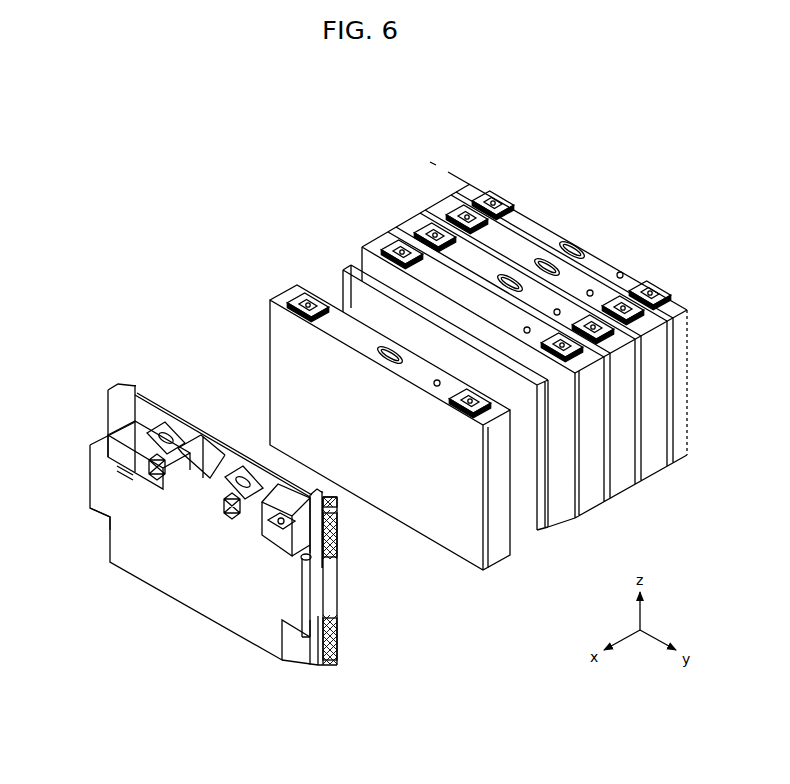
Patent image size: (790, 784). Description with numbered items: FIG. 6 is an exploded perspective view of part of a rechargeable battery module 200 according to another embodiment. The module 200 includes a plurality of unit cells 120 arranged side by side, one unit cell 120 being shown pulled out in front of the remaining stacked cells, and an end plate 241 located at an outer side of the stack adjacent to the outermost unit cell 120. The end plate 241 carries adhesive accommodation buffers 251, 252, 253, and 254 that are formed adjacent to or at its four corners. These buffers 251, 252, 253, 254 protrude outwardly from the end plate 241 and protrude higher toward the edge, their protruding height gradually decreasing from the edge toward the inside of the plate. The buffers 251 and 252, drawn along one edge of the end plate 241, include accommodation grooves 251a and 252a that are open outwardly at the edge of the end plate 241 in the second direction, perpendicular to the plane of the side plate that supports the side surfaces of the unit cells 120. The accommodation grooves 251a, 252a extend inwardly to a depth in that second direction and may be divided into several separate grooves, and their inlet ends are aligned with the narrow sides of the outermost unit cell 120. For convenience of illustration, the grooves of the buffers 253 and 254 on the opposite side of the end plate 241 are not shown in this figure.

The rechargeable battery module 200 is at (300, 236).
The unit cell 120 is at (503, 558).
The end plate 241 is at (180, 602).
The adhesive accommodation buffer 251 is at (351, 577).
The accommodation groove 251a is at (338, 537).
The adhesive accommodation buffer 252 is at (342, 663).
The accommodation groove 252a is at (338, 641).
The adhesive accommodation buffer 253 is at (106, 525).
The adhesive accommodation buffer 254 is at (108, 408).